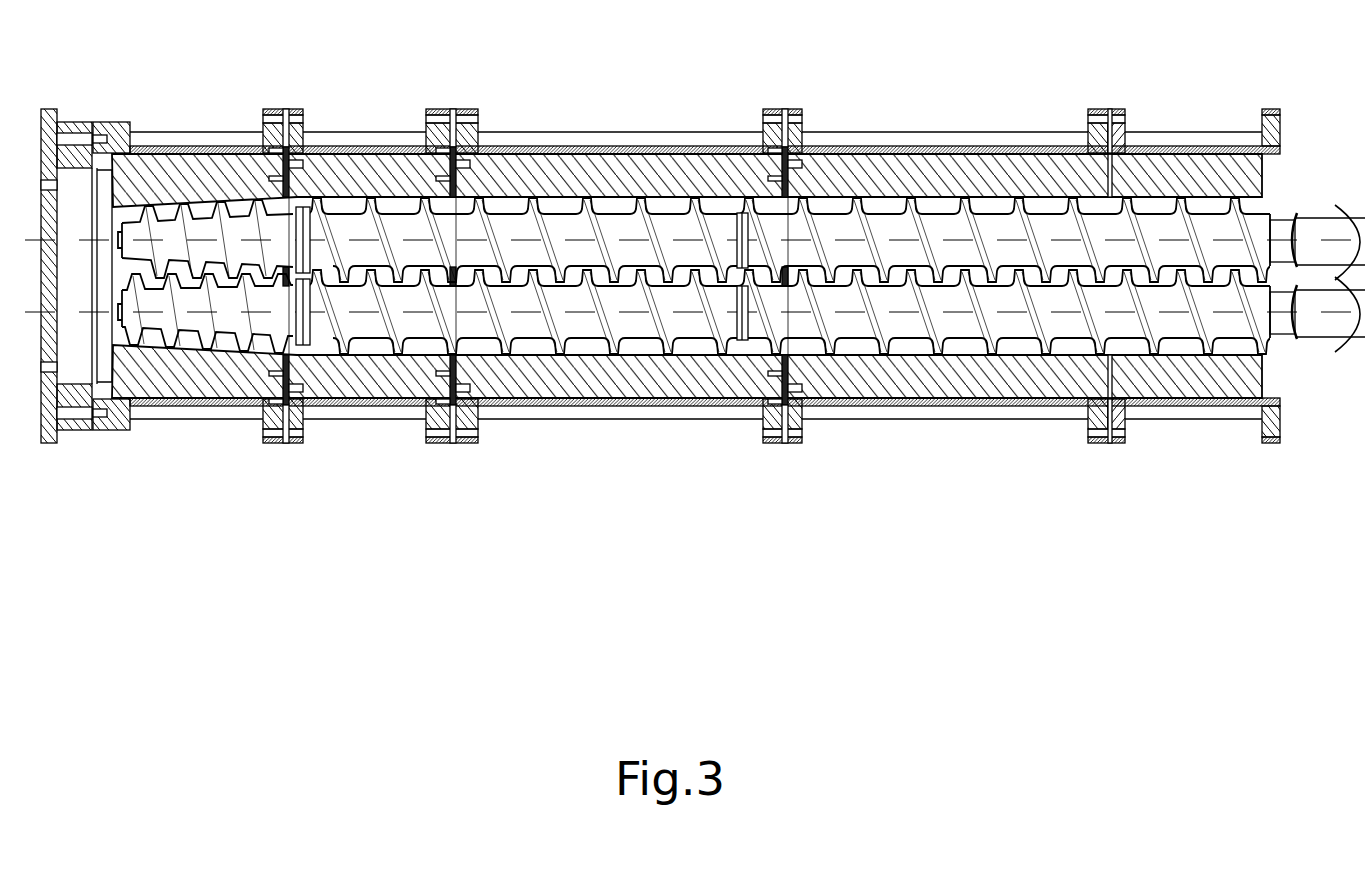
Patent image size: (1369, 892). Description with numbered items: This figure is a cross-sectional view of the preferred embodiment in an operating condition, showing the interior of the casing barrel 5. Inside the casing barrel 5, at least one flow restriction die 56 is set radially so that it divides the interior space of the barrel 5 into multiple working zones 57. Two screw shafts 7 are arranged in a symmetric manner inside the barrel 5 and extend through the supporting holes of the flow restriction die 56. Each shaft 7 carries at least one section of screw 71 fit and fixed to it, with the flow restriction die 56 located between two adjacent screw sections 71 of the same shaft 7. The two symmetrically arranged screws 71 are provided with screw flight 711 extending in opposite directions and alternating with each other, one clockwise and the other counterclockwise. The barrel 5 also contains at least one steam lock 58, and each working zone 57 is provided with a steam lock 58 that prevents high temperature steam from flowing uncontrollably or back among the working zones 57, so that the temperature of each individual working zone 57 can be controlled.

The casing barrel 5 is at (573, 133).
The flow restriction die 56 is at (488, 147).
The working zone 57 is at (590, 167).
The steam lock 58 is at (745, 190).
The screw shaft 7 is at (1318, 228).
The screw 71 is at (711, 272).
The screw flight 711 is at (1197, 182).